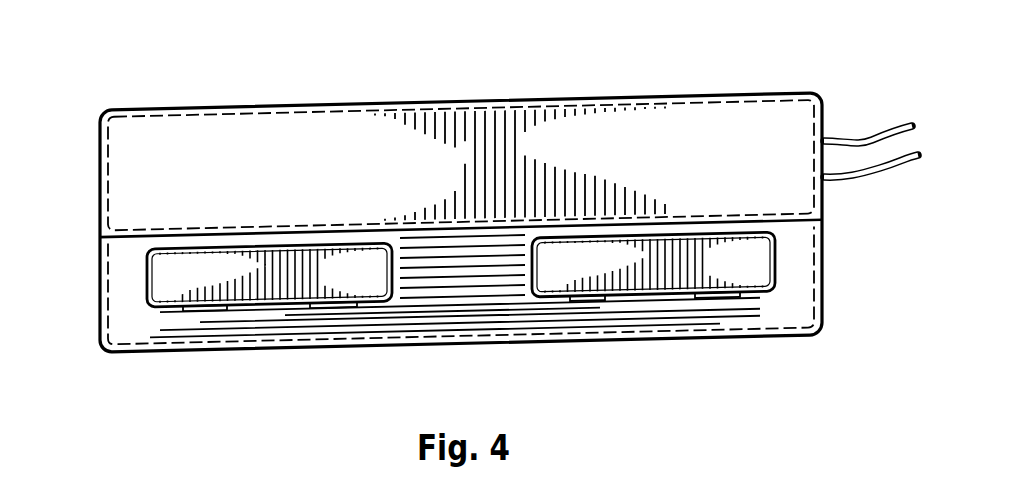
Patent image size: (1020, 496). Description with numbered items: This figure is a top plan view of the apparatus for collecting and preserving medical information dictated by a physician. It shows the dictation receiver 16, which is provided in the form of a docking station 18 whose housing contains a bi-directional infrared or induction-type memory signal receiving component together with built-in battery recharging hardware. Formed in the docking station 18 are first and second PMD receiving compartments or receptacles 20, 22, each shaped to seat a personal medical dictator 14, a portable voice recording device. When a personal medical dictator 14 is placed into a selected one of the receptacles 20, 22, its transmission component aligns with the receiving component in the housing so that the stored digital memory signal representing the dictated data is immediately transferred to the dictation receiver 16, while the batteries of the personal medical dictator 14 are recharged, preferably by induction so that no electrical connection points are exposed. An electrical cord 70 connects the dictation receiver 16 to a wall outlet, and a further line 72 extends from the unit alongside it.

The personal medical dictator 14 is at (165, 265).
The dictation receiver 16 is at (690, 94).
The docking station 18 is at (763, 118).
The first PMD receiving compartment 20 is at (150, 283).
The second PMD receiving compartment 22 is at (750, 281).
The electrical cord 70 is at (853, 137).
The power wire 72 is at (902, 168).